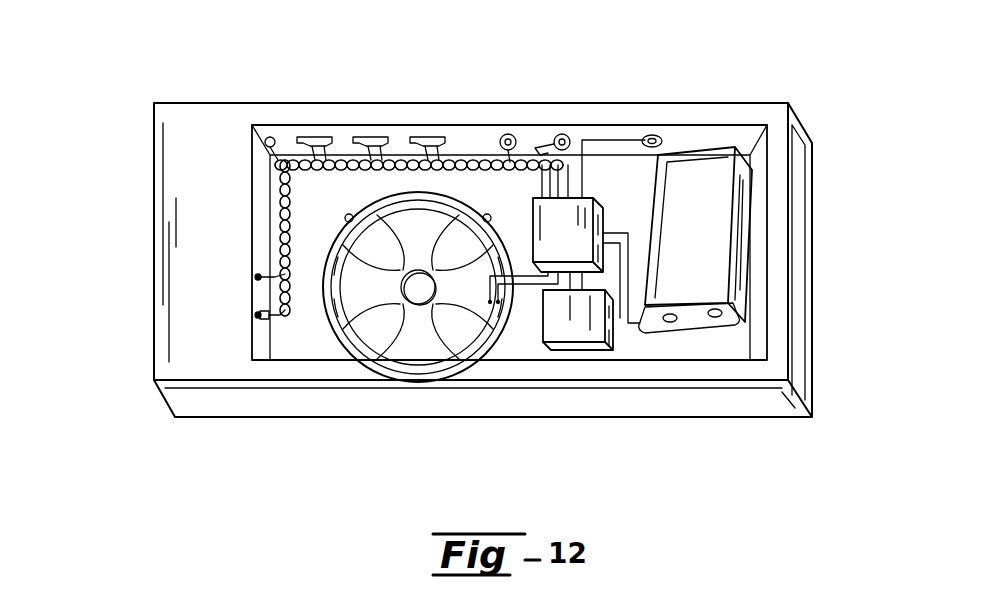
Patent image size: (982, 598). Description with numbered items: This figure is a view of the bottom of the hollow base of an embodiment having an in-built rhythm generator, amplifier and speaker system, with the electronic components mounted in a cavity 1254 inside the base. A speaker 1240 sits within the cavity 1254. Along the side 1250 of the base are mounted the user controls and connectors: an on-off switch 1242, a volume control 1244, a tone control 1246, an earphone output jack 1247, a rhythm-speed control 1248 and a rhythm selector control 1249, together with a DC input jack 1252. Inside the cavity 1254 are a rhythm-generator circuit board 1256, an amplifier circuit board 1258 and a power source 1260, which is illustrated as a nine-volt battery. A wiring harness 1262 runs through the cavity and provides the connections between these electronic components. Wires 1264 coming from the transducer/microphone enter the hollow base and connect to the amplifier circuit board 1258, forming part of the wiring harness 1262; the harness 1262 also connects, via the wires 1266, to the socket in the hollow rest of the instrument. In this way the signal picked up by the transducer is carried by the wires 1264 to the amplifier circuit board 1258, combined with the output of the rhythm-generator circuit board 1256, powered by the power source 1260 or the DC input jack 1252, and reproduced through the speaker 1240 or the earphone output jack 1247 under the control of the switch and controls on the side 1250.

The speaker 1240 is at (413, 345).
The on-off switch 1242 is at (267, 138).
The volume control 1244 is at (314, 136).
The tone control 1246 is at (371, 136).
The earphone output jack 1247 is at (510, 134).
The rhythm-speed control 1248 is at (428, 136).
The rhythm selector control 1249 is at (565, 134).
The side 1250 is at (180, 103).
The DC input jack 1252 is at (652, 135).
The cavity 1254 is at (750, 137).
The rhythm-generator circuit board 1256 is at (563, 332).
The amplifier circuit board 1258 is at (545, 250).
The power source 1260 is at (712, 255).
The wiring harness 1262 is at (482, 150).
The wires 1264 is at (255, 277).
The wires 1266 is at (255, 315).